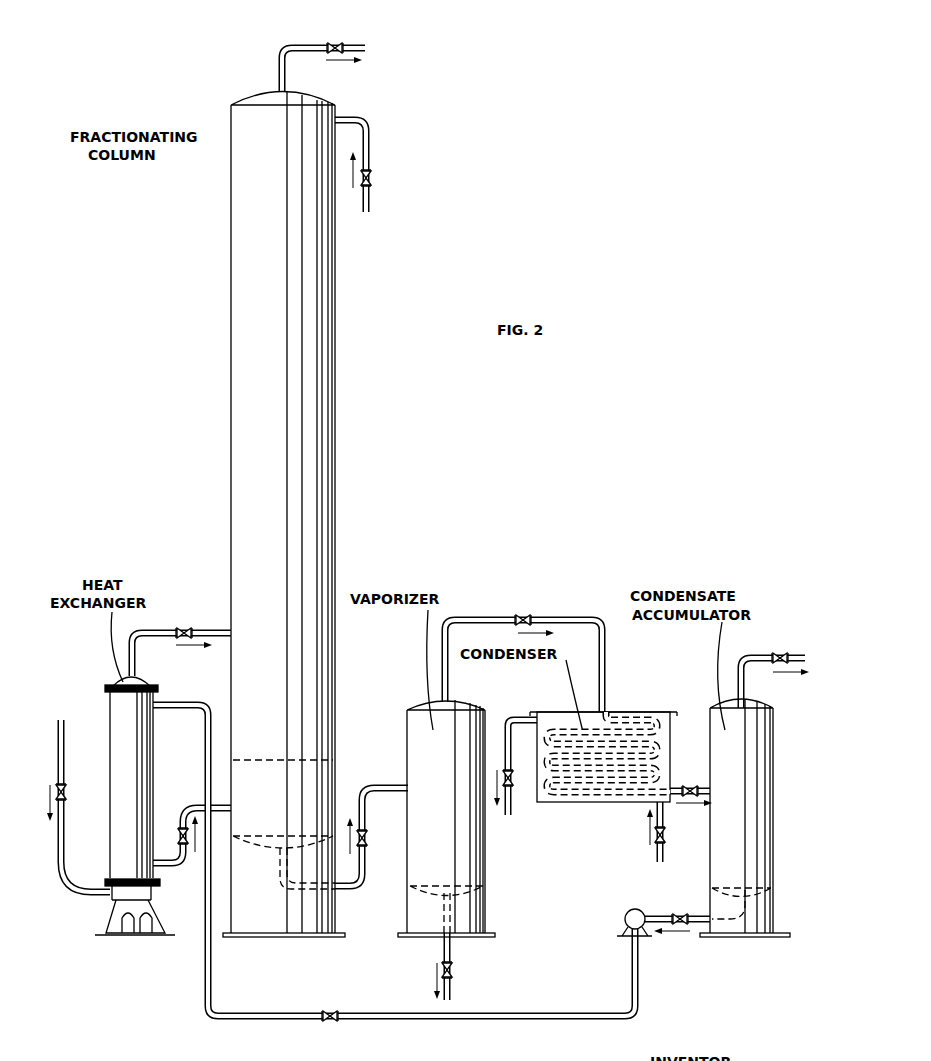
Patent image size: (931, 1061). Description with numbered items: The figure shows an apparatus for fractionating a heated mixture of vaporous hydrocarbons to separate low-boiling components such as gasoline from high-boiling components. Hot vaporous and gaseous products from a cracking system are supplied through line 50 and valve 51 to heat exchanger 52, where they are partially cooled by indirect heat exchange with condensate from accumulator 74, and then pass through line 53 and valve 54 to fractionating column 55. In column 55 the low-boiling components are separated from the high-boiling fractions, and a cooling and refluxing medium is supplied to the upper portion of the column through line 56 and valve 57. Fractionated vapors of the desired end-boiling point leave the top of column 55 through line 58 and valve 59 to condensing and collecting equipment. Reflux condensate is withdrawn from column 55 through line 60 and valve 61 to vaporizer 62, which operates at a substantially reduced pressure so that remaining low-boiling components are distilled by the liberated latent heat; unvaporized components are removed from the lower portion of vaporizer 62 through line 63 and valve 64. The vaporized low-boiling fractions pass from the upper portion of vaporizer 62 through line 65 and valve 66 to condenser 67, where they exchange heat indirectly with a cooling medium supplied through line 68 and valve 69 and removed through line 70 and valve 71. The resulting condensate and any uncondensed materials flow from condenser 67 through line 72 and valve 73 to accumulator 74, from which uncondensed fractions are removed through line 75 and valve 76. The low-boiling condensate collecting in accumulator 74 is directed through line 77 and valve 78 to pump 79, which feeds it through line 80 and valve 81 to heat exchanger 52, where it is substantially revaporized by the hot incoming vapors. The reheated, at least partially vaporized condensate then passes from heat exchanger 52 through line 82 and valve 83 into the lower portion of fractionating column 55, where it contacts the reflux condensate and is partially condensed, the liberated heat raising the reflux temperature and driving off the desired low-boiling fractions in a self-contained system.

The line 50 is at (64, 745).
The valve 51 is at (66, 786).
The heat exchanger 52 is at (135, 806).
The line 53 is at (137, 667).
The valve 54 is at (186, 628).
The fractionating column 55 is at (178, 152).
The line 56 is at (372, 205).
The valve 57 is at (372, 176).
The line 58 is at (280, 72).
The valve 59 is at (335, 43).
The line 60 is at (356, 889).
The valve 61 is at (368, 837).
The vaporizer 62 is at (446, 818).
The line 63 is at (451, 952).
The valve 64 is at (453, 968).
The line 65 is at (449, 700).
The valve 66 is at (525, 615).
The condenser 67 is at (620, 738).
The line 68 is at (657, 850).
The valve 69 is at (668, 836).
The line 70 is at (514, 720).
The valve 71 is at (511, 787).
The line 72 is at (674, 798).
The valve 73 is at (690, 786).
The accumulator 74 is at (745, 818).
The line 75 is at (745, 692).
The valve 76 is at (781, 655).
The line 77 is at (700, 921).
The valve 78 is at (679, 914).
The pump 79 is at (637, 908).
The line 80 is at (631, 975).
The valve 81 is at (334, 1012).
The line 82 is at (168, 864).
The valve 83 is at (180, 831).